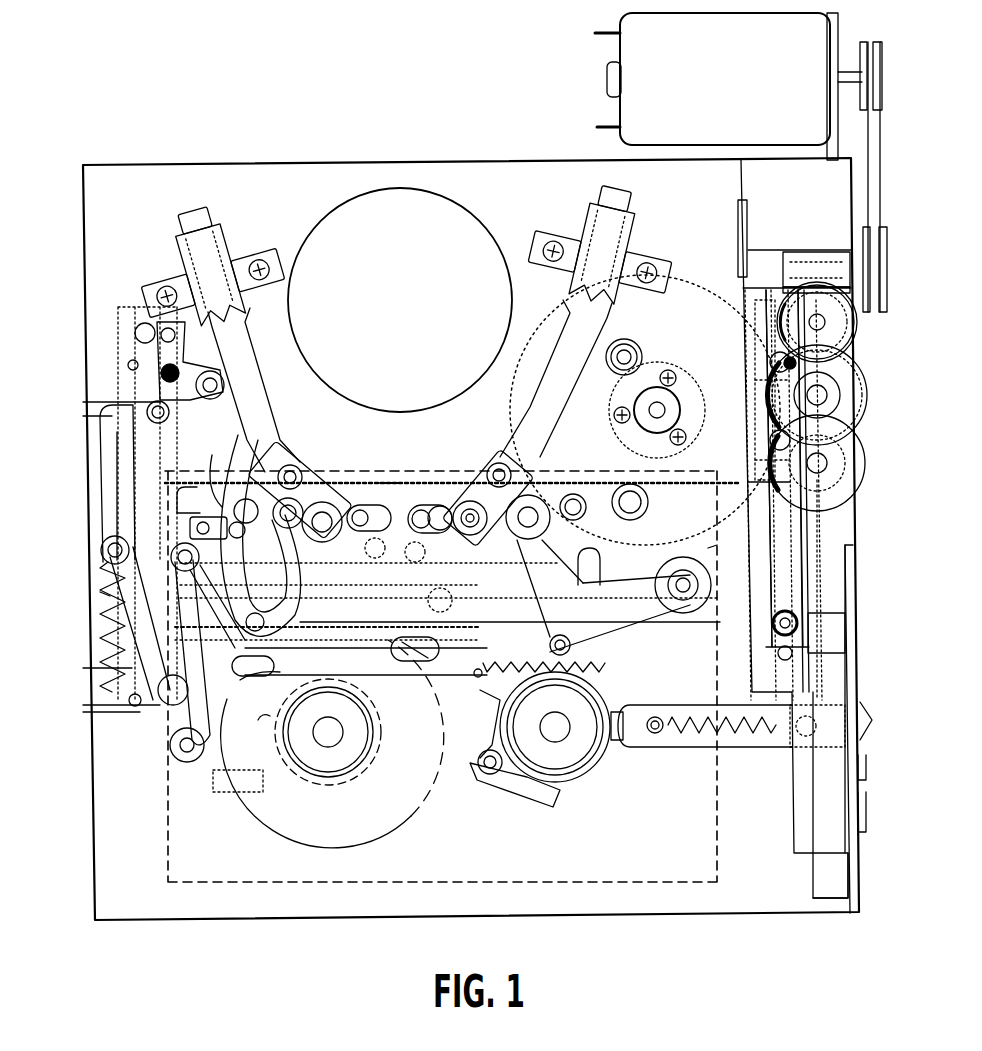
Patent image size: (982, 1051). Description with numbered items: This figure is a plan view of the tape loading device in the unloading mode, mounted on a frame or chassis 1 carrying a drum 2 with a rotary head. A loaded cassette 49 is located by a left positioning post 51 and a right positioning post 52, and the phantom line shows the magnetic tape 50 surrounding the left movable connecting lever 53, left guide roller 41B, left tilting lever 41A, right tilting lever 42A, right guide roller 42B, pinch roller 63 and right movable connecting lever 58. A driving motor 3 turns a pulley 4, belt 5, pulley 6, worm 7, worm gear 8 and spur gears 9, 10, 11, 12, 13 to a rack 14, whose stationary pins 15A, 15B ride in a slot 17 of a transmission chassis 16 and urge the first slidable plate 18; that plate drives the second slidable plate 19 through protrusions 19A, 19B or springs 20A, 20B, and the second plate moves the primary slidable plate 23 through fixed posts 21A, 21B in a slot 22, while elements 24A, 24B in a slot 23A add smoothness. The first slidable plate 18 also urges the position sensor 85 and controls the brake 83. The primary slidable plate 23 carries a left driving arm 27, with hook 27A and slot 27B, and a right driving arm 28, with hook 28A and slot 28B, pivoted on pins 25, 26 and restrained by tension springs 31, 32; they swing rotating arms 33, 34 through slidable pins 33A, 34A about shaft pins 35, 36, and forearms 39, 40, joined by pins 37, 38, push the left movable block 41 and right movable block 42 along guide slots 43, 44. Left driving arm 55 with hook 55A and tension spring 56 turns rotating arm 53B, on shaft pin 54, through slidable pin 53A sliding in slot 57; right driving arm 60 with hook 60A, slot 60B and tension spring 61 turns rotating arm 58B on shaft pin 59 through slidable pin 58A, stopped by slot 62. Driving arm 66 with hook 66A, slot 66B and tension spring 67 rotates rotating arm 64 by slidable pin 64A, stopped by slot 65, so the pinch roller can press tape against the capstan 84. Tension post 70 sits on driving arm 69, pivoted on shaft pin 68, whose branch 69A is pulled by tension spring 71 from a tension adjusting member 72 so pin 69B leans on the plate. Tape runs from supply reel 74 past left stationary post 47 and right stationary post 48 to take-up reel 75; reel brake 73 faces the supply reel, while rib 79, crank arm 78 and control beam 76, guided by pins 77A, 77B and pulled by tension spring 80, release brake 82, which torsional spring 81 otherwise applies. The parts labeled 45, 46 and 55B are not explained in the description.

The frame or chassis 1 is at (312, 178).
The drum 2 is at (438, 213).
The driving motor 3 is at (666, 100).
The pulley 4 is at (882, 66).
The belt 5 is at (880, 162).
The pulley 6 is at (886, 270).
The worm 7 is at (808, 258).
The worm gear 8 is at (853, 318).
The spur gear 9 is at (860, 346).
The spur gear 10 is at (864, 386).
The spur gear 11 is at (836, 398).
The spur gear 12 is at (864, 459).
The spur gear 13 is at (846, 482).
The rack 14 is at (806, 542).
The stationary pin 15A is at (850, 508).
The stationary pin 15B is at (800, 632).
The transmission chassis 16 is at (836, 581).
The slot 17 is at (770, 352).
The first slidable plate 18 is at (768, 459).
The second slidable plate 19 is at (756, 396).
The protrusion 19A is at (748, 483).
The protrusion 19B is at (753, 441).
The spring 20A is at (752, 376).
The spring 20B is at (762, 343).
The fixed post 21A is at (730, 537).
The fixed post 21B is at (762, 593).
The slot 22 is at (757, 563).
The primary slidable plate 23 is at (675, 661).
The slot 23A is at (100, 334).
The guide member 24A is at (118, 322).
The guide member 24B is at (100, 363).
The pin 25 is at (326, 583).
The pin 26 is at (413, 591).
The left driving arm 27 is at (185, 652).
The hook 27A is at (320, 706).
The slot 27B is at (177, 604).
The right driving arm 28 is at (606, 646).
The hook 28A is at (575, 699).
The slot 28B is at (643, 662).
The tension spring 31 is at (187, 564).
The tension spring 32 is at (509, 629).
The rotating arm 33 is at (100, 578).
The slidable pin 33A is at (178, 589).
The rotating arm 34 is at (629, 590).
The slidable pin 34A is at (660, 631).
The shaft pin 35 is at (100, 594).
The shaft pin 36 is at (706, 556).
The pin 37 is at (371, 571).
The pin 38 is at (409, 571).
The forearm 39 is at (369, 506).
The forearm 40 is at (425, 507).
The left movable block 41 is at (298, 452).
The left tilting lever 41A is at (340, 470).
The left guide roller 41B is at (326, 472).
The right movable block 42 is at (484, 465).
The right tilting lever 42A is at (440, 505).
The right guide roller 42B is at (463, 500).
The left guide slot 43 is at (268, 420).
The right guide slot 44 is at (520, 428).
The bracket 45 is at (232, 262).
The bracket 46 is at (548, 248).
The left stationary post 47 is at (204, 400).
The right stationary post 48 is at (624, 339).
The cassette 49 is at (192, 882).
The magnetic tape 50 is at (385, 482).
The left positioning post 51 is at (214, 474).
The right positioning post 52 is at (648, 500).
The left movable guide post 53 is at (240, 464).
The slidable pin 53A is at (308, 591).
The rotating arm 53B is at (206, 516).
The shaft pin 54 is at (194, 494).
The left driving arm 55 is at (482, 649).
The hook 55A is at (279, 666).
The slide edge 55B is at (327, 629).
The tension spring 56 is at (331, 591).
The slot 57 is at (254, 586).
The right movable guide post 58 is at (575, 494).
The slidable pin 58A is at (640, 693).
The rotating arm 58B is at (589, 527).
The shaft pin 59 is at (676, 606).
The right driving arm 60 is at (566, 676).
The hook 60A is at (544, 699).
The slot 60B is at (609, 596).
The tension spring 61 is at (506, 606).
The slot 62 is at (600, 566).
The pinch roller 63 is at (541, 494).
The rotating arm 64 is at (635, 565).
The slidable pin 64A is at (633, 720).
The slot 65 is at (613, 546).
The driving arm 66 is at (476, 680).
The hook 66A is at (478, 650).
The slot 66B is at (513, 649).
The tension spring 67 is at (461, 601).
The shaft pin 68 is at (168, 742).
The driving arm 69 is at (108, 666).
The branch 69A is at (152, 704).
The pin 69B is at (108, 542).
The tension post 70 is at (83, 402).
The tension spring 71 is at (98, 629).
The tension adjusting member 72 is at (100, 471).
The reel brake 73 is at (296, 792).
The supply reel 74 is at (328, 762).
The take-up reel 75 is at (572, 748).
The control beam 76 is at (410, 662).
The pin 77A is at (408, 662).
The pin 77B is at (262, 686).
The crank arm 78 is at (261, 726).
The rib 79 is at (215, 806).
The tension spring 80 is at (482, 704).
The torsional spring 81 is at (478, 731).
The brake 82 is at (507, 790).
The brake 83 is at (630, 737).
The capstan 84 is at (657, 400).
The position sensor 85 is at (833, 870).